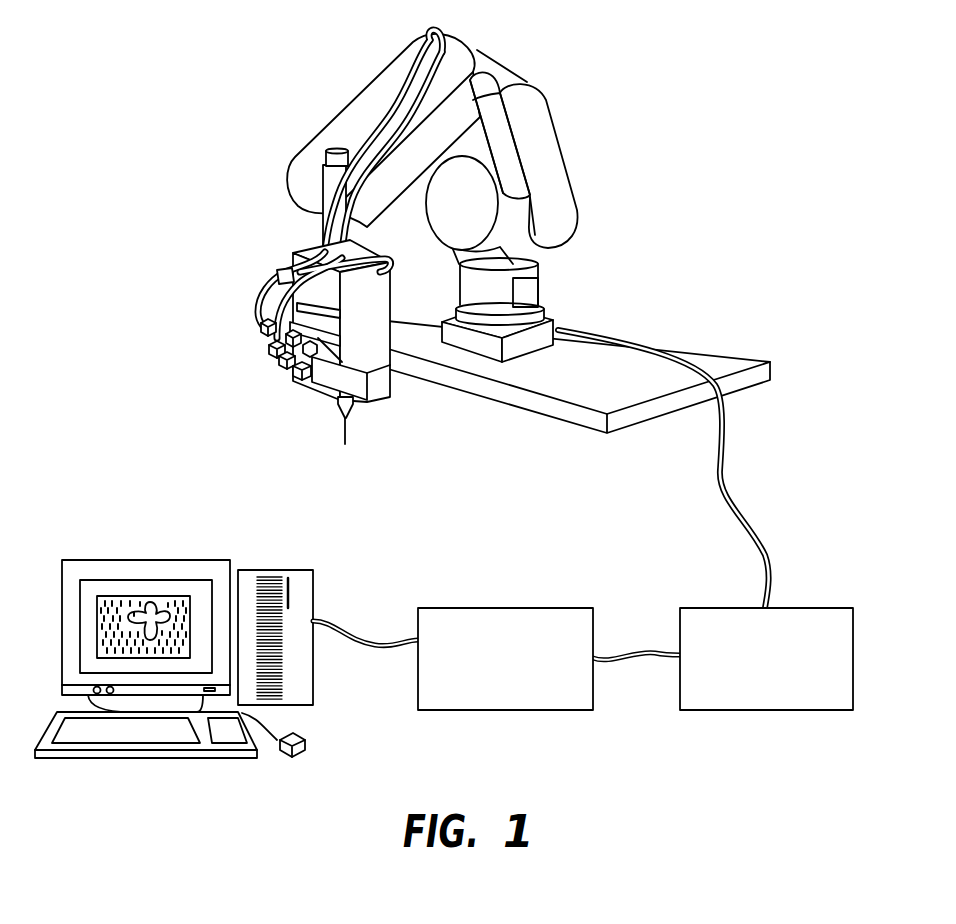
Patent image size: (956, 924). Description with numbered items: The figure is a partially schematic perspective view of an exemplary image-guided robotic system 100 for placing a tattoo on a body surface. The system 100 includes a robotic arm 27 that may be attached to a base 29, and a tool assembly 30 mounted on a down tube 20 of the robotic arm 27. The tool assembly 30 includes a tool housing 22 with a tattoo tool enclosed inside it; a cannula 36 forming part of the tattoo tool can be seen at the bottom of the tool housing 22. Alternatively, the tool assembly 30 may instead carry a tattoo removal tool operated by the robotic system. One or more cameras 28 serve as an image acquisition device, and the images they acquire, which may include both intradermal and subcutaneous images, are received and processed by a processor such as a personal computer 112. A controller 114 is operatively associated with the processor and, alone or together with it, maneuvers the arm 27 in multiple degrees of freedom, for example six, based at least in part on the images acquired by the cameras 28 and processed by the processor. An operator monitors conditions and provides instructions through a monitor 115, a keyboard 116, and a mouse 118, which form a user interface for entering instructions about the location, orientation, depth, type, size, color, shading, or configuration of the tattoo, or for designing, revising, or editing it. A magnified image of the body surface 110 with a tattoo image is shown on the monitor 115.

The image-guided robotic system 100 is at (349, 83).
The robotic arm 27 is at (293, 170).
The down tube 20 is at (323, 235).
The tool housing 22 is at (385, 305).
The cameras 28 is at (243, 328).
The base 29 is at (558, 330).
The tool assembly 30 is at (396, 403).
The cannula 36 is at (343, 418).
The body surface 110 is at (156, 604).
The personal computer 112 is at (531, 608).
The controller 114 is at (811, 608).
The monitor 115 is at (219, 565).
The keyboard 116 is at (125, 759).
The mouse 118 is at (295, 756).